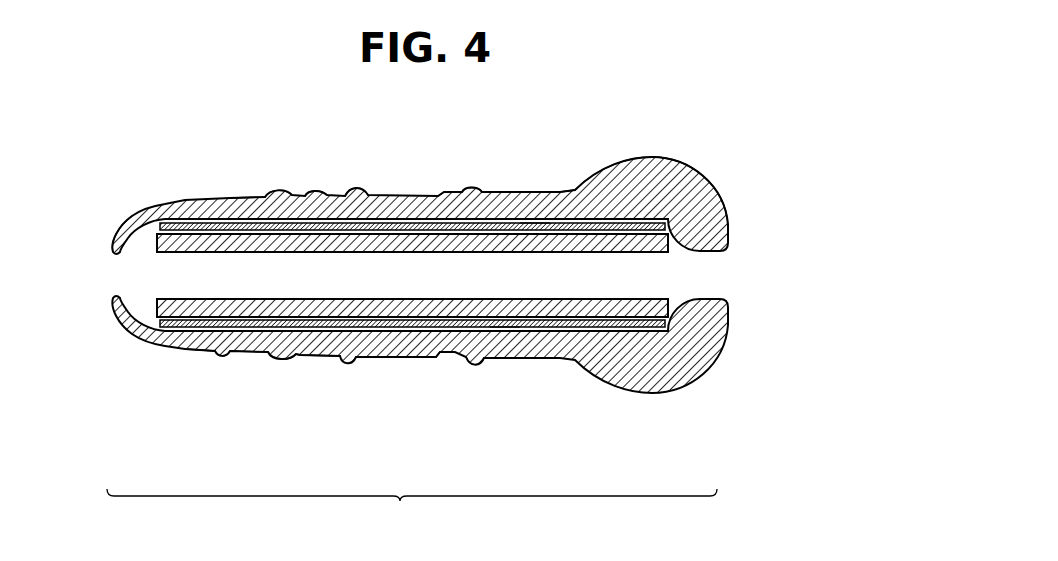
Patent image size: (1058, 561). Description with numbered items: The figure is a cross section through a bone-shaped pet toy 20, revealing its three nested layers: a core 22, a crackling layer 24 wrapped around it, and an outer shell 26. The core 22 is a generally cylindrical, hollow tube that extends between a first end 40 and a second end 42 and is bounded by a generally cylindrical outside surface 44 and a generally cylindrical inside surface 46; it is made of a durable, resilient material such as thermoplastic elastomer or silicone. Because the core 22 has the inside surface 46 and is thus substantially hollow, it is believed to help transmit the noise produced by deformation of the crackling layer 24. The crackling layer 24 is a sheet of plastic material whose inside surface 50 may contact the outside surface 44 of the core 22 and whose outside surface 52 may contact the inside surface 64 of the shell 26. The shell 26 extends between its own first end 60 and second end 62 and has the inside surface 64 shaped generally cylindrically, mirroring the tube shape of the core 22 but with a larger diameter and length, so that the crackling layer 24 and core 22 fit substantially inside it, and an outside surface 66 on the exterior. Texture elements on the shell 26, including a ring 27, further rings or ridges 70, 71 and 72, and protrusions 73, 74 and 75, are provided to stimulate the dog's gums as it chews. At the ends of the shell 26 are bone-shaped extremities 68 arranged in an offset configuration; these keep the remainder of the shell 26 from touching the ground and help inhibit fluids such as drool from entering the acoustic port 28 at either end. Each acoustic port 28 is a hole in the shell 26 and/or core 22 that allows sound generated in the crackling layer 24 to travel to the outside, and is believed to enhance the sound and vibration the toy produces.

The pet toy 20 is at (412, 510).
The core 22 is at (230, 294).
The crackling layer 24 is at (400, 205).
The shell 26 is at (503, 172).
The ring 27 is at (353, 195).
The acoustic port 28 is at (100, 277).
The first end 40 is at (154, 302).
The second end 42 is at (673, 305).
The outside surface 44 is at (380, 214).
The inside surface 46 is at (399, 252).
The inside surface 50 is at (535, 222).
The outside surface 52 is at (432, 222).
The first end 60 is at (114, 237).
The second end 62 is at (726, 216).
The inside surface 64 is at (235, 210).
The outside surface 66 is at (332, 193).
The bone-shaped extremity 68 is at (693, 166).
The ring or ridge 70 is at (514, 196).
The ring or ridge 71 is at (473, 368).
The ring or ridge 72 is at (302, 360).
The protrusion 73 is at (275, 358).
The protrusion 74 is at (230, 358).
The protrusion 75 is at (280, 195).